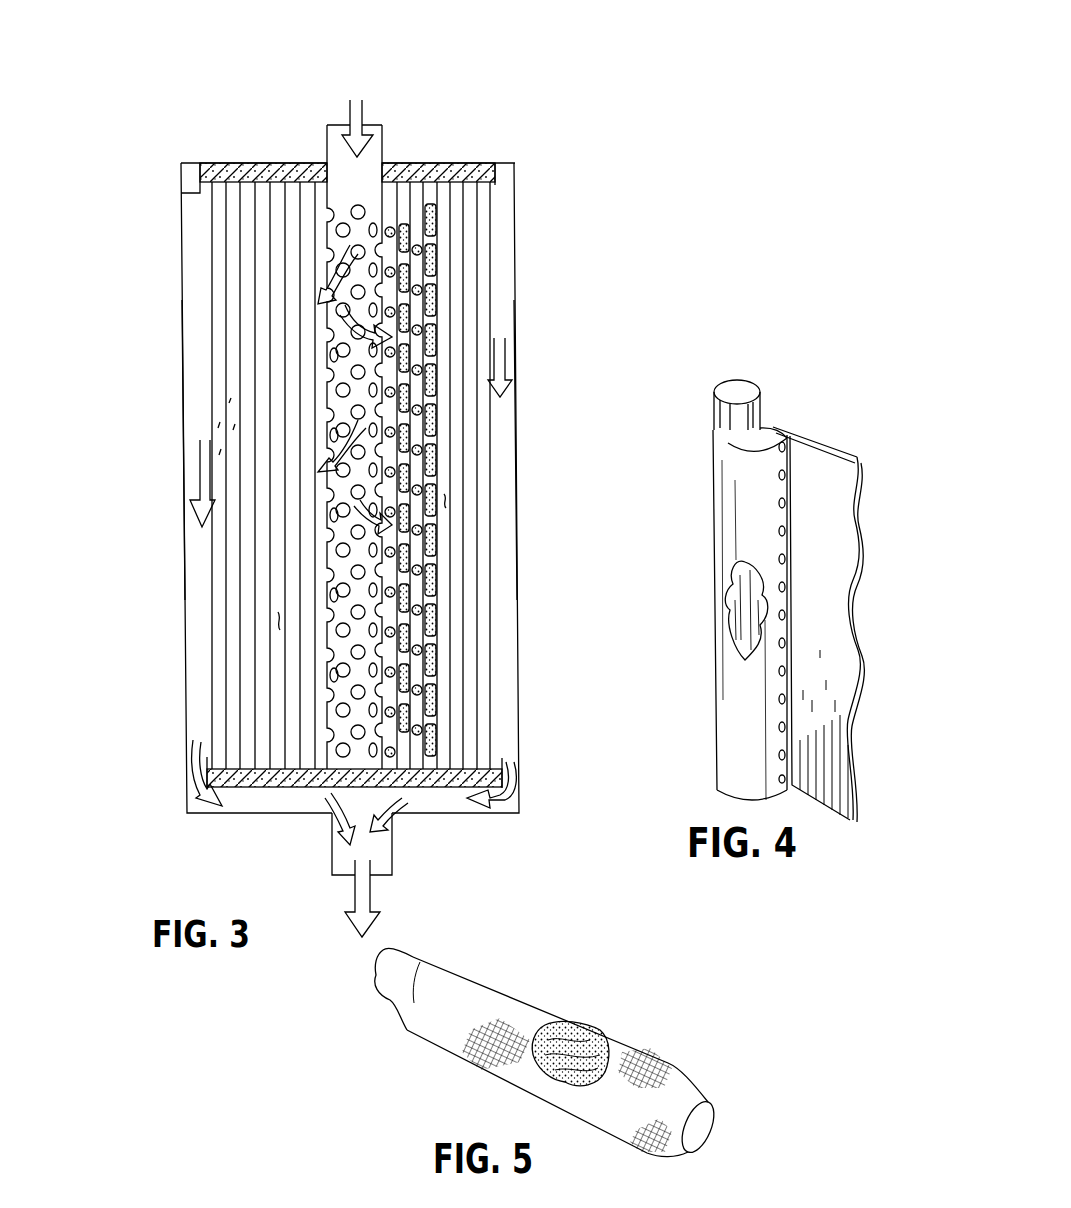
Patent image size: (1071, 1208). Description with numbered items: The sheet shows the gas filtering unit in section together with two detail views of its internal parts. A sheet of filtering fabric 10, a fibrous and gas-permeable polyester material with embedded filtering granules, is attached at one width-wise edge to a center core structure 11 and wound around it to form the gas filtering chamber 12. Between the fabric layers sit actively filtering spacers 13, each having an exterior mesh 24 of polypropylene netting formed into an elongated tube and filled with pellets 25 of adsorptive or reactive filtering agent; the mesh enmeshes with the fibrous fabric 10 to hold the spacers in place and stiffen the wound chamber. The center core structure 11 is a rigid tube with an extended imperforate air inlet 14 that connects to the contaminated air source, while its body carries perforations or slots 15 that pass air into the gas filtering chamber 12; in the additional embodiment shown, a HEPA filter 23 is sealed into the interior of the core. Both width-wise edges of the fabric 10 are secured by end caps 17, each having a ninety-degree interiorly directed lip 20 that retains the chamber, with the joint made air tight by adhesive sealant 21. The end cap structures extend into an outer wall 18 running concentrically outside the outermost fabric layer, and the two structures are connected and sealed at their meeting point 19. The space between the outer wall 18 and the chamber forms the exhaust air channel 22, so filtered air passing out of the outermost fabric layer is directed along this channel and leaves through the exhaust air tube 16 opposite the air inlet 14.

In FIG. 3, the filtering fabric 10 is at (263, 222).
In FIG. 4, the filtering fabric 10 is at (835, 525).
In FIG. 4, the center core structure 11 is at (730, 482).
In FIG. 3, the gas filtering chamber 12 is at (280, 628).
In FIG. 3, the actively filtering spacers 13 is at (410, 163).
In FIG. 5, the actively filtering spacers 13 is at (513, 976).
In FIG. 3, the air inlet 14 is at (373, 128).
In FIG. 4, the air inlet 14 is at (743, 390).
In FIG. 4, the perforations or slots 15 is at (783, 643).
In FIG. 3, the exhaust air tube 16 is at (332, 857).
In FIG. 3, the end caps 17 is at (238, 165).
In FIG. 3, the outer wall 18 is at (178, 238).
In FIG. 3, the meeting point 19 is at (182, 458).
In FIG. 3, the interiorly directed lip 20 is at (181, 193).
In FIG. 3, the adhesive sealant 21 is at (268, 232).
In FIG. 3, the exhaust air channel 22 is at (199, 356).
In FIG. 4, the HEPA filter 23 is at (743, 590).
In FIG. 5, the exterior mesh 24 is at (665, 1063).
In FIG. 5, the pellets 25 is at (587, 1030).